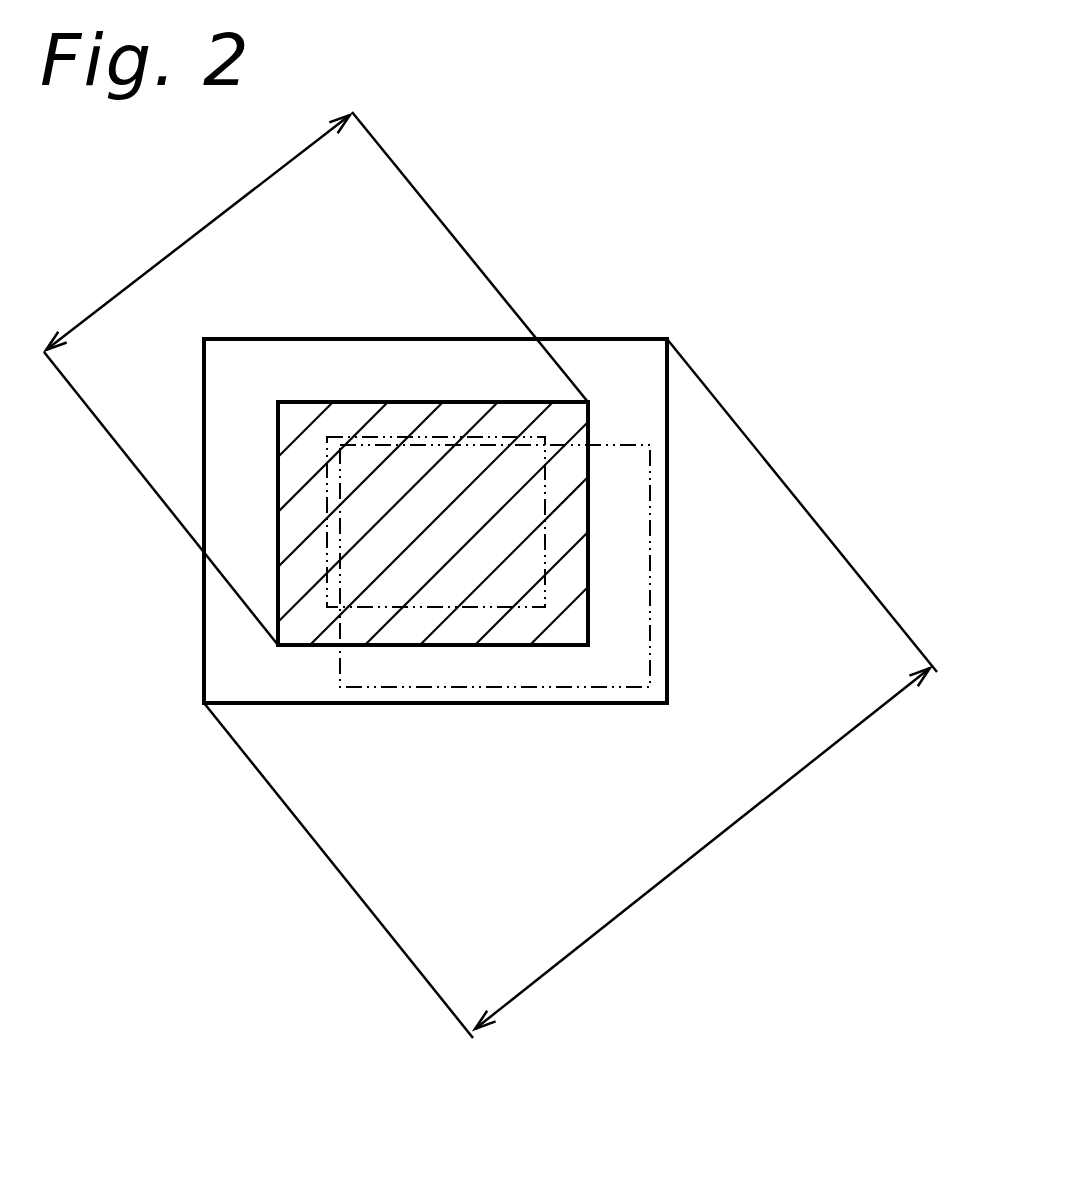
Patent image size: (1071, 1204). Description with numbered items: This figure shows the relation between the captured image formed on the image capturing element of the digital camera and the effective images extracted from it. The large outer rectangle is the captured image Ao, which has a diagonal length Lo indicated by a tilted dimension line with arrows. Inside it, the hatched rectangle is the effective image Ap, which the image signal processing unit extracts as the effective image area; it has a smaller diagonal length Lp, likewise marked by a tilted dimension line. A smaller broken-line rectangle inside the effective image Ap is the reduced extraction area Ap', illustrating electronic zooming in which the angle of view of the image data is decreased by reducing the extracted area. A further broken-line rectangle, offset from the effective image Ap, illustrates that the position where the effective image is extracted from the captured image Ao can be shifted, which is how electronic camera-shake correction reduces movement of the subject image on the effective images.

The captured image Ao is at (483, 705).
The effective image Ap is at (433, 446).
The reduced effective image Ap' is at (415, 427).
The diagonal length of effective image Lp is at (316, 378).
The diagonal length of captured image Lo is at (570, 688).